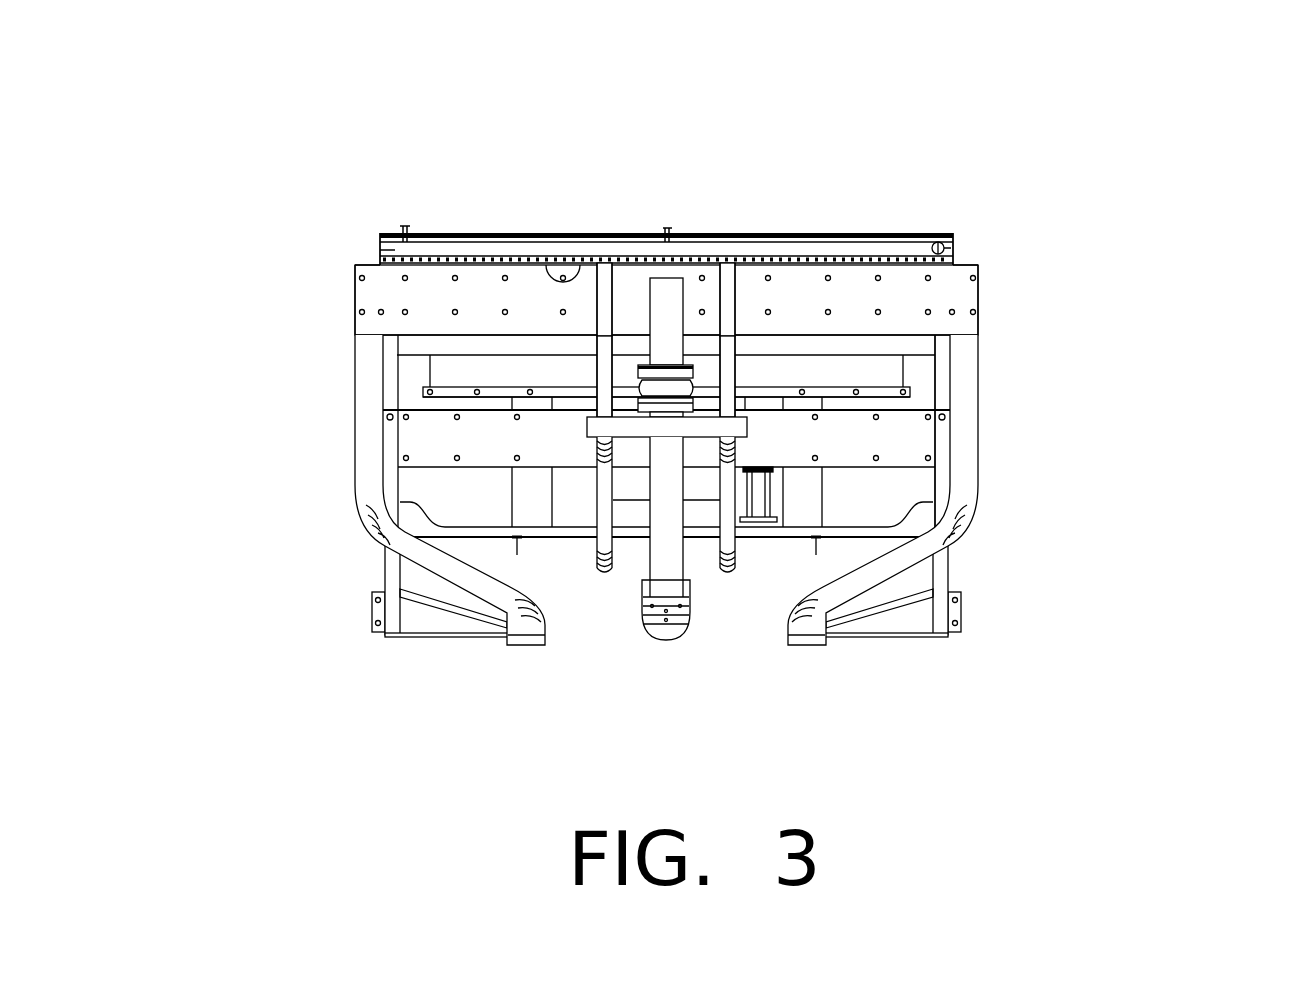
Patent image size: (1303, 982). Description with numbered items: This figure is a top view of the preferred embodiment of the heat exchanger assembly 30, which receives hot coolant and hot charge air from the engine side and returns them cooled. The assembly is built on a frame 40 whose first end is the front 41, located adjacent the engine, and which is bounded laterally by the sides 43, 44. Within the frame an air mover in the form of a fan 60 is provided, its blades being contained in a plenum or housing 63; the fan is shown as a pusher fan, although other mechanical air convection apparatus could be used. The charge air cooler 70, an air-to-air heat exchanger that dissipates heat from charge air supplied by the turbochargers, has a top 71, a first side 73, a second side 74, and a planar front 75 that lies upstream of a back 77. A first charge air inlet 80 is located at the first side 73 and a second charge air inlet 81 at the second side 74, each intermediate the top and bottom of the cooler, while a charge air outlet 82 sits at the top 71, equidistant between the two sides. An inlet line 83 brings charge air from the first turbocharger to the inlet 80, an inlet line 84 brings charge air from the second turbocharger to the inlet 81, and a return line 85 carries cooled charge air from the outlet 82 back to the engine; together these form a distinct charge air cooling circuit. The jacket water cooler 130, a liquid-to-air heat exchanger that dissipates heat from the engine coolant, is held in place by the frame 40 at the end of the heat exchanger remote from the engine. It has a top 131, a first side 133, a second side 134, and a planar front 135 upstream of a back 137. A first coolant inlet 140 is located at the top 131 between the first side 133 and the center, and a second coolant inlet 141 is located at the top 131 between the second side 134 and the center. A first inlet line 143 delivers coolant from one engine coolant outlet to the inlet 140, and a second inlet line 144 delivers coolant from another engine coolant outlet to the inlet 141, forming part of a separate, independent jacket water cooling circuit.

The heat exchanger assembly 30 is at (1115, 172).
The frame 40 is at (351, 628).
The front 41 is at (389, 637).
The side 43 is at (372, 582).
The side 44 is at (962, 573).
The fan 60 is at (938, 362).
The housing 63 is at (934, 366).
The charge air cooler 70 is at (984, 298).
The top 71 is at (473, 288).
The first side 73 is at (355, 298).
The second side 74 is at (980, 275).
The front 75 is at (357, 337).
The back 77 is at (372, 262).
The first charge air inlet 80 is at (358, 342).
The second charge air inlet 81 is at (979, 336).
The charge air outlet 82 is at (667, 278).
The inlet line 83 is at (360, 483).
The inlet line 84 is at (978, 455).
The return line 85 is at (688, 568).
The jacket water cooler 130 is at (866, 213).
The top 131 is at (775, 250).
The first side 133 is at (376, 252).
The second side 134 is at (955, 238).
The front 135 is at (553, 260).
The back 137 is at (700, 250).
The first coolant inlet 140 is at (605, 290).
The second coolant inlet 141 is at (728, 258).
The first inlet line 143 is at (593, 320).
The second inlet line 144 is at (740, 300).